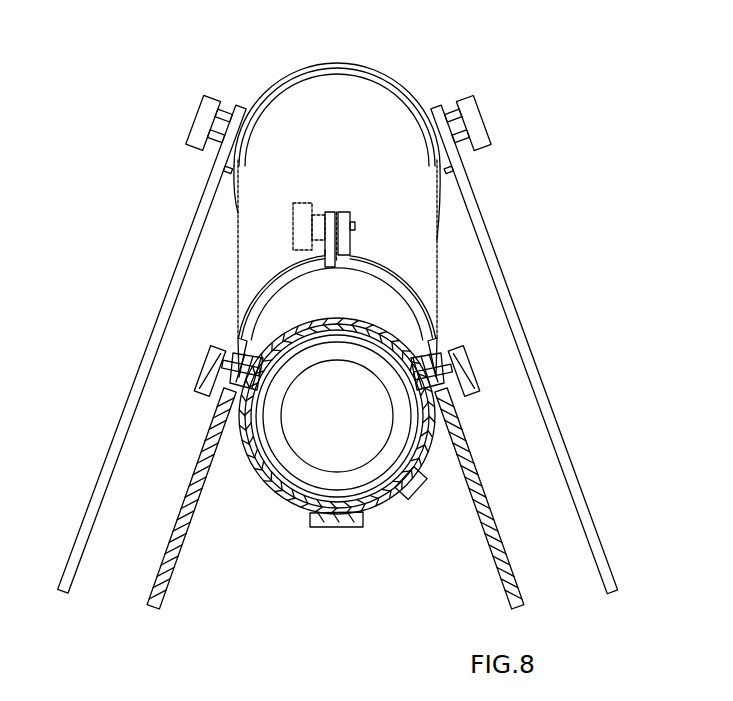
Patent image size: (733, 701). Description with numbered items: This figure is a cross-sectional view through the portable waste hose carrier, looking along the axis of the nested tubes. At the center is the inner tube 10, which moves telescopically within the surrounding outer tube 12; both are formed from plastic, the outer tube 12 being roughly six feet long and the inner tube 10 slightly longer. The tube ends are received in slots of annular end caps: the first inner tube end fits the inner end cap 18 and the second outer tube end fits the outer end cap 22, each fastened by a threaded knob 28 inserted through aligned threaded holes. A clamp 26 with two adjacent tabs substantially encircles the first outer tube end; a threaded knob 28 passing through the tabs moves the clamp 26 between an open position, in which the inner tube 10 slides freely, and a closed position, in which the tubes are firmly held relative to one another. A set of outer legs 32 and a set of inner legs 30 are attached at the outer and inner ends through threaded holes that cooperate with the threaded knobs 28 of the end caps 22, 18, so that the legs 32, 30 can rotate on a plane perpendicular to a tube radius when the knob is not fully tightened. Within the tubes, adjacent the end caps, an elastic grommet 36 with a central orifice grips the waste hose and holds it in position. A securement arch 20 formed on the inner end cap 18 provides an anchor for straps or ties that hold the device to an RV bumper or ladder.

The inner tube 10 is at (283, 500).
The outer tube 12 is at (410, 220).
The inner end cap 18 is at (245, 460).
The securement arch 20 is at (410, 507).
The outer end cap 22 is at (420, 100).
The clamp 26 is at (433, 337).
The threaded knob 28 is at (200, 140).
The inner legs 30 is at (163, 576).
The outer legs 32 is at (93, 507).
The elastic grommet 36 is at (268, 423).